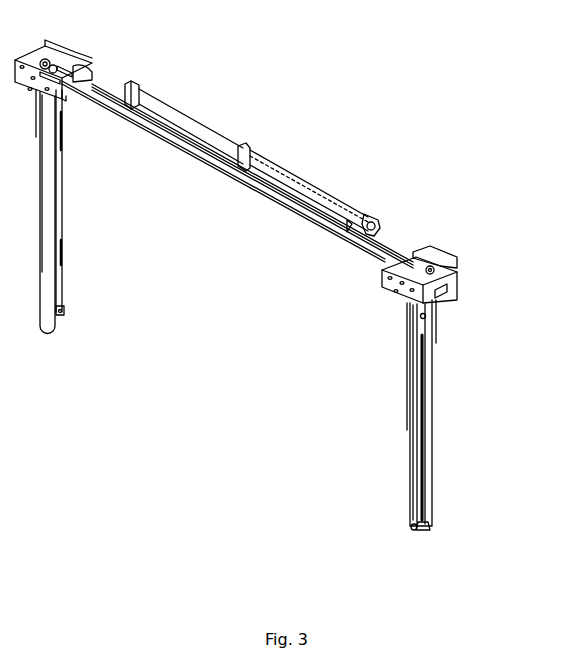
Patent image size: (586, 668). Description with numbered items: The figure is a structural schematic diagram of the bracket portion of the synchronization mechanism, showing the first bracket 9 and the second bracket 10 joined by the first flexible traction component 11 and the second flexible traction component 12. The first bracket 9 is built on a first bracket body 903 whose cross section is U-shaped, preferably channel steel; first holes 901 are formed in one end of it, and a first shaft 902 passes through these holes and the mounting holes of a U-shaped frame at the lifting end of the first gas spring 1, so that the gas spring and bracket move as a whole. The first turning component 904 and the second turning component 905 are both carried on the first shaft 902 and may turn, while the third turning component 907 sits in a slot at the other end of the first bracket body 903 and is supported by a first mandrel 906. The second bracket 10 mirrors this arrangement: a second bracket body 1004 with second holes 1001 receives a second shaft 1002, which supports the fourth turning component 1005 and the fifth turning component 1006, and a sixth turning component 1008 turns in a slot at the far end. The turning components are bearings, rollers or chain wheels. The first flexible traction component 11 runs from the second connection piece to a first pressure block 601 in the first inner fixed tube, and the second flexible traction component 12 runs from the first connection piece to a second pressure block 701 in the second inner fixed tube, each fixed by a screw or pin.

The first gas spring 1 is at (432, 400).
The first bracket 9 is at (424, 484).
The second bracket 10 is at (62, 262).
The first flexible traction component 11 is at (378, 226).
The second flexible traction component 12 is at (386, 249).
The first pressure block 601 is at (426, 317).
The second pressure block 701 is at (58, 87).
The first hole 901 is at (440, 266).
The first shaft 902 is at (436, 273).
The first bracket body 903 is at (414, 440).
The first turning component 904 is at (438, 293).
The second turning component 905 is at (457, 283).
The first mandrel 906 is at (422, 523).
The third turning component 907 is at (428, 527).
The second hole 1001 is at (55, 70).
The second shaft 1002 is at (68, 72).
The second bracket body 1004 is at (63, 315).
The fourth turning component 1005 is at (50, 65).
The fifth turning component 1006 is at (44, 60).
The sixth turning component 1008 is at (60, 301).